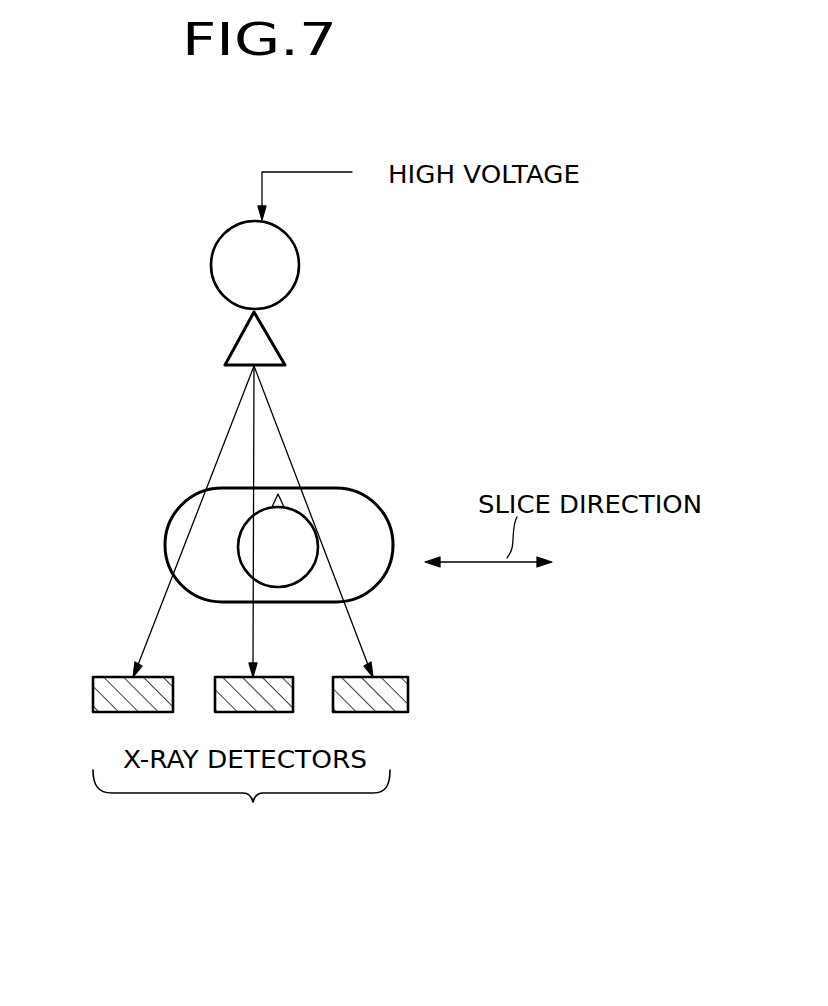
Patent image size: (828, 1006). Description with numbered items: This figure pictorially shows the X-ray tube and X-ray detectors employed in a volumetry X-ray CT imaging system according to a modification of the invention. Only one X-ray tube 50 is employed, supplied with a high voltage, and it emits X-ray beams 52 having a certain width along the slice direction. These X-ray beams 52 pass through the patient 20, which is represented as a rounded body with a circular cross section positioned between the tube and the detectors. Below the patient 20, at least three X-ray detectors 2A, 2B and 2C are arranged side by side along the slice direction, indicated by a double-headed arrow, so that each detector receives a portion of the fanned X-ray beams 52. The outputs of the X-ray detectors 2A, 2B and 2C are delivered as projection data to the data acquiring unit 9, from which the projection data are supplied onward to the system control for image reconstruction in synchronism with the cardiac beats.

The X-ray tube 50 is at (217, 273).
The X-ray beams 52 is at (282, 465).
The patient 20 is at (373, 508).
The X-ray detector 2A is at (162, 677).
The X-ray detector 2B is at (282, 677).
The X-ray detector 2C is at (398, 677).
The data acquiring unit 9 is at (241, 844).